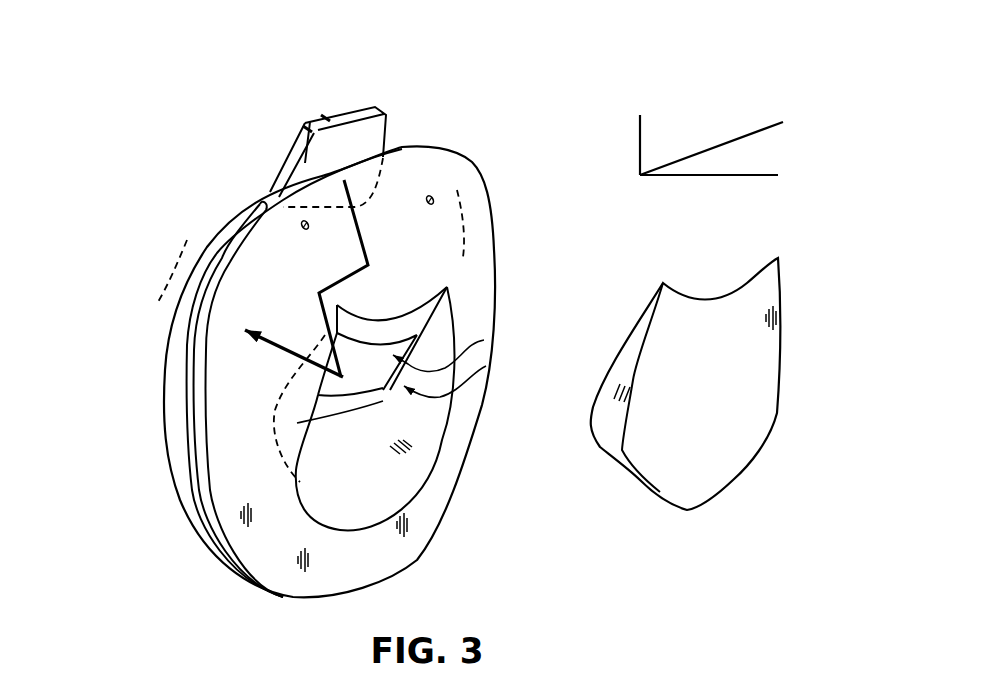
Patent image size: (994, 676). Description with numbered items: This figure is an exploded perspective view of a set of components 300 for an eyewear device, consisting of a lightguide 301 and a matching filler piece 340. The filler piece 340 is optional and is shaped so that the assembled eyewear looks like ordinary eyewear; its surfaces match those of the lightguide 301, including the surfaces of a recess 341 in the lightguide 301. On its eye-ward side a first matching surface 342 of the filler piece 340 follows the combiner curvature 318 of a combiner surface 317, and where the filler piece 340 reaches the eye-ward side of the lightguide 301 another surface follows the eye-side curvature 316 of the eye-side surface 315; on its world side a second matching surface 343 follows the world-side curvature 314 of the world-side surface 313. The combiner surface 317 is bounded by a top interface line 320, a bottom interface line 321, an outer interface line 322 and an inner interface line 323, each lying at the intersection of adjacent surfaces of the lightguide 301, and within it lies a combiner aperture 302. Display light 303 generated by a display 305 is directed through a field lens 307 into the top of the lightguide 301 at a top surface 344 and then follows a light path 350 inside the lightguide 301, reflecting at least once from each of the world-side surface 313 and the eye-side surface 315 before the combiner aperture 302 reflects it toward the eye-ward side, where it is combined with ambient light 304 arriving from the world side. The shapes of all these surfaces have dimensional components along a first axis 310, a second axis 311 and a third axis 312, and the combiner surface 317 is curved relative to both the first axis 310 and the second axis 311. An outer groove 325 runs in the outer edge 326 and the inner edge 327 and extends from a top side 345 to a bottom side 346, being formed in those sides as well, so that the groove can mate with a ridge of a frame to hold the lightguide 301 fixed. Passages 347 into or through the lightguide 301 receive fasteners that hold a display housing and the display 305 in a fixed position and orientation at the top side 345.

The set of components 300 is at (512, 78).
The lightguide 301 is at (467, 323).
The combiner aperture 302 is at (383, 370).
The display light 303 is at (378, 190).
The ambient light 304 is at (476, 549).
The display 305 is at (303, 132).
The field lens 307 is at (389, 130).
The first (x) axis 310 is at (680, 160).
The second (y) axis 311 is at (638, 140).
The third (z) axis 312 is at (722, 176).
The world-side surface 313 is at (275, 540).
The world-side curvature 314 is at (470, 228).
The eye-side surface 315 is at (206, 230).
The eye-side curvature 316 is at (178, 266).
The combiner surface 317 is at (484, 340).
The combiner curvature 318 is at (379, 387).
The top interface line 320 is at (372, 318).
The bottom interface line 321 is at (327, 432).
The outer interface line 322 is at (293, 373).
The inner interface line 323 is at (486, 366).
The outer groove 325 is at (187, 372).
The outer edge 326 is at (180, 436).
The inner edge 327 is at (492, 284).
The filler piece 340 is at (699, 404).
The recess 341 is at (402, 480).
The first matching surface 342 is at (630, 342).
The second matching surface 343 is at (762, 386).
The top surface 344 is at (271, 189).
The top side 345 is at (413, 152).
The bottom side 346 is at (292, 598).
The passages 347 is at (440, 198).
The light path 350 is at (350, 207).